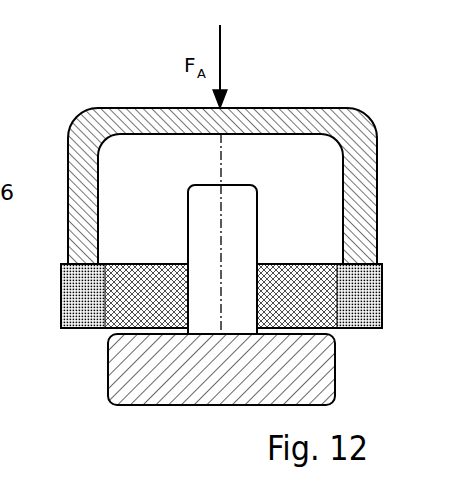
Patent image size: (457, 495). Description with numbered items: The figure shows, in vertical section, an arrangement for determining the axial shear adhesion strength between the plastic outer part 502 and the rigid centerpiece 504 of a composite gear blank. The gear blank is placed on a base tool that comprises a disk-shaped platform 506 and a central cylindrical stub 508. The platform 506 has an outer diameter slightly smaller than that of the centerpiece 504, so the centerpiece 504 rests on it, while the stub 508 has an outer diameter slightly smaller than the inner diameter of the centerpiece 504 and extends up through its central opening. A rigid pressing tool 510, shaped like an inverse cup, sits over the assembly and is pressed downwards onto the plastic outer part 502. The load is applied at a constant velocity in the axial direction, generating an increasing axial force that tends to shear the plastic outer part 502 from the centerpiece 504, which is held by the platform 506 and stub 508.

The rigid pressing tool 510 is at (268, 118).
The central cylindrical stub 508 is at (199, 222).
The rigid centerpiece 504 is at (283, 283).
The plastic outer part 502 is at (72, 302).
The disk-shaped platform 506 is at (117, 377).